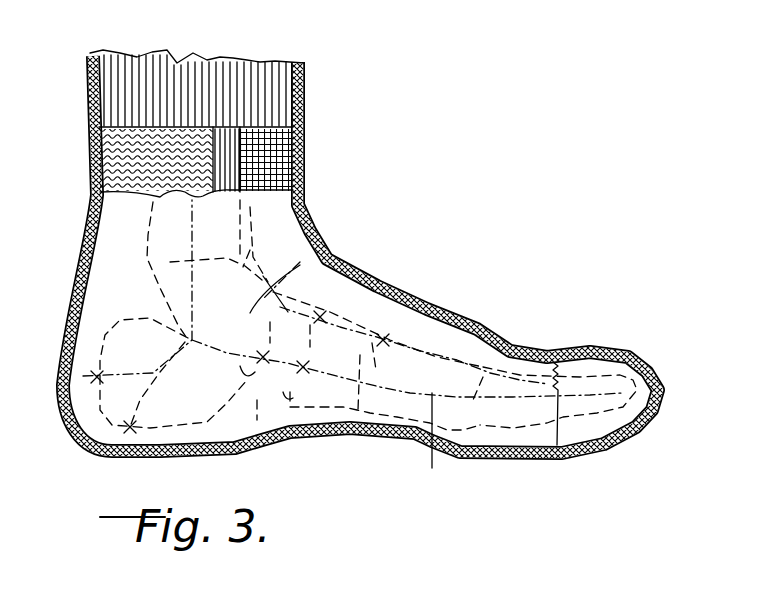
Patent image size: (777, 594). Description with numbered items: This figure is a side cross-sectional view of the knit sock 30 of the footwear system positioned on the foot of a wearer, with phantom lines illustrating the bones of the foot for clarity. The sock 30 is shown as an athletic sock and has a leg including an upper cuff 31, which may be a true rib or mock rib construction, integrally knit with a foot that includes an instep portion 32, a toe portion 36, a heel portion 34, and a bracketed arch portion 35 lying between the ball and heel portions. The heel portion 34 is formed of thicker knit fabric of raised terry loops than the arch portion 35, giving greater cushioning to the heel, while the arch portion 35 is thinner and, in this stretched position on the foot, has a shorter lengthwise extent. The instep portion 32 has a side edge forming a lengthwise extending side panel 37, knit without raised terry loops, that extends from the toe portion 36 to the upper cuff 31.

The knit sock 30 is at (371, 286).
The upper cuff 31 is at (270, 93).
The instep portion 32 is at (418, 296).
The heel portion 34 is at (77, 436).
The arch portion 35 is at (432, 468).
The toe portion 36 is at (666, 385).
The side panel 37 is at (290, 268).